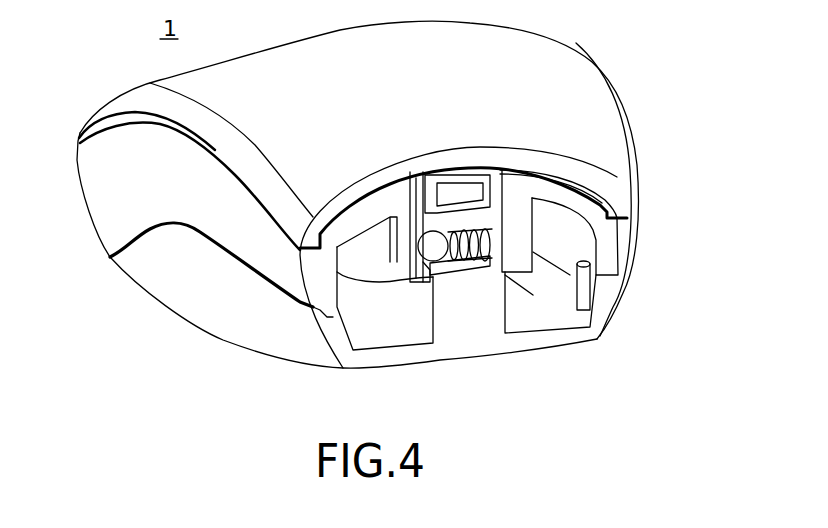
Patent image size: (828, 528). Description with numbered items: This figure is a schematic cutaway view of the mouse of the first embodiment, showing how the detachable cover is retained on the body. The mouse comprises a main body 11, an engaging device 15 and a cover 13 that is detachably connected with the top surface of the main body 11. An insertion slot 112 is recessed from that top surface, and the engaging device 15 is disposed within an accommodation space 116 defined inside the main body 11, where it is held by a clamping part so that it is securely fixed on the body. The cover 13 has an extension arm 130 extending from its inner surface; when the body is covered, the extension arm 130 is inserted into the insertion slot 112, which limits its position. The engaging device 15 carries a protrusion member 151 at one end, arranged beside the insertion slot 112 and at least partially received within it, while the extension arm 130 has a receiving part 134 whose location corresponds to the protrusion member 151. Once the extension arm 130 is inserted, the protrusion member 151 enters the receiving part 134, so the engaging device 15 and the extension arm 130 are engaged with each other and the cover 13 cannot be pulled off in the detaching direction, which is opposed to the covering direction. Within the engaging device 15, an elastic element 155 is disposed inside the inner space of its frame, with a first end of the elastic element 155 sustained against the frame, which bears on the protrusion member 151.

The main body 11 is at (105, 206).
The cover 13 is at (503, 47).
The engaging device 15 is at (428, 258).
The insertion slot 112 is at (333, 306).
The accommodation space 116 is at (538, 290).
The extension arm 130 is at (428, 222).
The receiving part 134 is at (425, 250).
The protrusion member 151 is at (427, 232).
The elastic element 155 is at (467, 232).